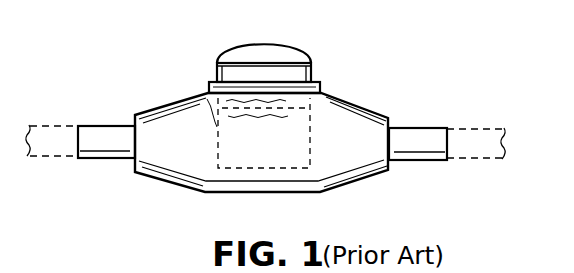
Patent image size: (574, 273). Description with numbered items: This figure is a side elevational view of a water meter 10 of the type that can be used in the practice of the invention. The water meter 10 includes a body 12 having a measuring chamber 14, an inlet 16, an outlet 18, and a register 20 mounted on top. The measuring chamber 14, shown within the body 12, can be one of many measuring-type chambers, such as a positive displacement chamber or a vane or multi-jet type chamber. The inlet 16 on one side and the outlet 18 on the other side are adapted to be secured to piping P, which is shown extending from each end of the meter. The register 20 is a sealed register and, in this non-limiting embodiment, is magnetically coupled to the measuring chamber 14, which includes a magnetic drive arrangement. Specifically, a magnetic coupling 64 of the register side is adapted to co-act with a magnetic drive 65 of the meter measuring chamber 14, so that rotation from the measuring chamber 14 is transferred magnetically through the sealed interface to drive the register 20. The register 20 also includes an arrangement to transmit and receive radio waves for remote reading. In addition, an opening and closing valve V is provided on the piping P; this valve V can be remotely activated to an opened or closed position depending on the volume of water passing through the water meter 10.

The water meter 10 is at (428, 70).
The body 12 is at (367, 172).
The measuring chamber 14 is at (215, 126).
The inlet 16 is at (85, 158).
The outlet 18 is at (420, 128).
The register 20 is at (250, 45).
The magnetic coupling 64 is at (322, 80).
The magnetic drive 65 is at (318, 122).
The piping P is at (50, 124).
The opening and closing valve V is at (528, 144).